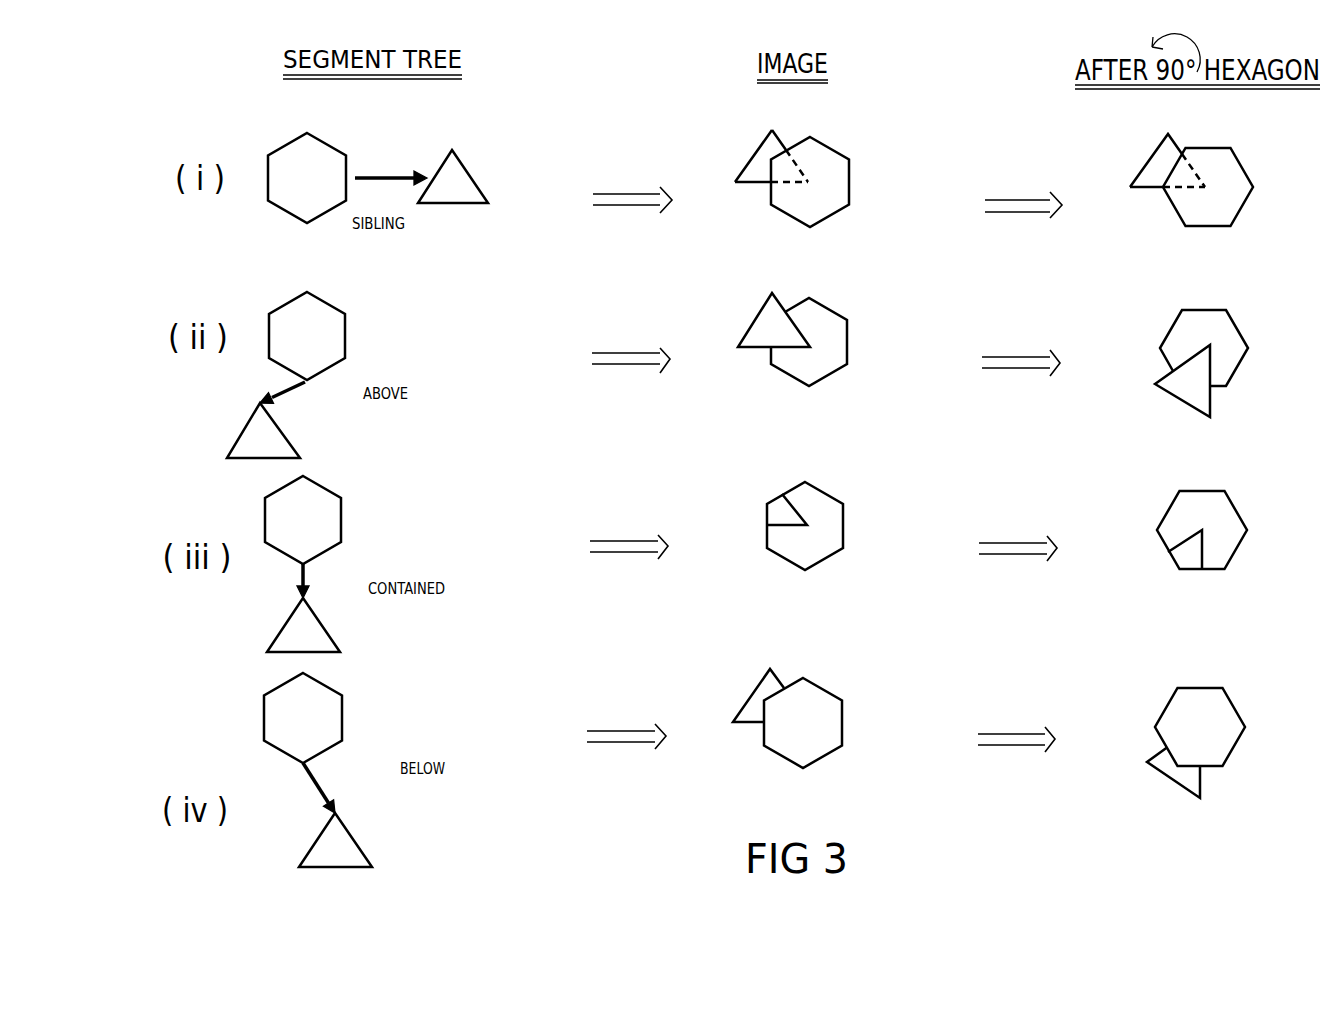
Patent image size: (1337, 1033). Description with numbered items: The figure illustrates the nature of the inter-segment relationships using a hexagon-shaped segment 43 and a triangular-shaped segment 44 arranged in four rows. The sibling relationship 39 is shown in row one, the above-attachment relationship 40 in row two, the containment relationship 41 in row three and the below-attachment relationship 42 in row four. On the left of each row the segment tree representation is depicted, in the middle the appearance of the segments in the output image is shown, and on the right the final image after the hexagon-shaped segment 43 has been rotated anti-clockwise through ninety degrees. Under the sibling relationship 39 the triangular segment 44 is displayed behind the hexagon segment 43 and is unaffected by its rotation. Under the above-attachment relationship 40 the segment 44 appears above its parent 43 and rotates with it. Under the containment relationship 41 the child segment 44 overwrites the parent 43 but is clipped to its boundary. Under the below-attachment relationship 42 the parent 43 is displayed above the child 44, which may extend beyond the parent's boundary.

The sibling relationship 39 is at (390, 173).
The above-attachment relationship 40 is at (285, 397).
The containment relationship 41 is at (306, 577).
The below-attachment relationship 42 is at (317, 780).
The hexagon-shaped segment 43 is at (363, 693).
The triangular-shaped segment 44 is at (375, 829).